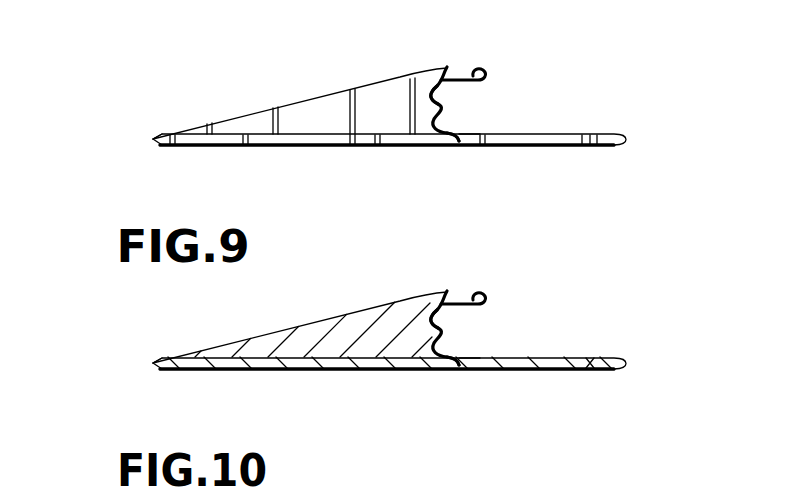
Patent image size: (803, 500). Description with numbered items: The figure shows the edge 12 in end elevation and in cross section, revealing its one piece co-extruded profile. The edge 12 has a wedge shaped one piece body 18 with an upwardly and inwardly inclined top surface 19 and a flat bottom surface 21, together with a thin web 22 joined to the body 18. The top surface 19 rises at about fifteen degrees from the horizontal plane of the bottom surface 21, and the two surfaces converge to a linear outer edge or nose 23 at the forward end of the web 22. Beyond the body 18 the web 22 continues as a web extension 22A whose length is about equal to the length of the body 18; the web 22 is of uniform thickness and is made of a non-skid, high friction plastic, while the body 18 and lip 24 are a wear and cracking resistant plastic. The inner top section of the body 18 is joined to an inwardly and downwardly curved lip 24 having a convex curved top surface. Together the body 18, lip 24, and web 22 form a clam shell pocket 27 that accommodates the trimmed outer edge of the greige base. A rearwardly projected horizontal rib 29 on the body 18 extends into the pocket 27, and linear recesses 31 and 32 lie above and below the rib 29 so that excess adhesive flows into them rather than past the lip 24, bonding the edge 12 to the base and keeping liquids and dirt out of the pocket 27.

In FIG. 9, the edge 12 is at (204, 104).
In FIG. 10, the edge 12 is at (183, 329).
In FIG. 9, the wedge shaped one piece body 18 is at (338, 108).
In FIG. 10, the wedge shaped one piece body 18 is at (348, 343).
In FIG. 9, the top surface 19 is at (293, 103).
In FIG. 10, the top surface 19 is at (300, 327).
In FIG. 9, the flat bottom surface 21 is at (388, 147).
In FIG. 10, the flat bottom surface 21 is at (377, 370).
In FIG. 9, the web 22 is at (273, 140).
In FIG. 10, the web 22 is at (287, 363).
In FIG. 9, the web extension 22A is at (598, 135).
In FIG. 10, the web extension 22A is at (590, 362).
In FIG. 9, the nose 23 is at (157, 137).
In FIG. 10, the nose 23 is at (157, 363).
In FIG. 9, the lip 24 is at (473, 72).
In FIG. 10, the lip 24 is at (482, 300).
In FIG. 9, the pocket 27 is at (457, 108).
In FIG. 10, the pocket 27 is at (460, 332).
In FIG. 9, the rib 29 is at (433, 110).
In FIG. 10, the rib 29 is at (433, 335).
In FIG. 9, the linear recess 31 is at (443, 88).
In FIG. 10, the linear recess 31 is at (453, 297).
In FIG. 9, the linear recess 32 is at (460, 133).
In FIG. 10, the linear recess 32 is at (455, 357).